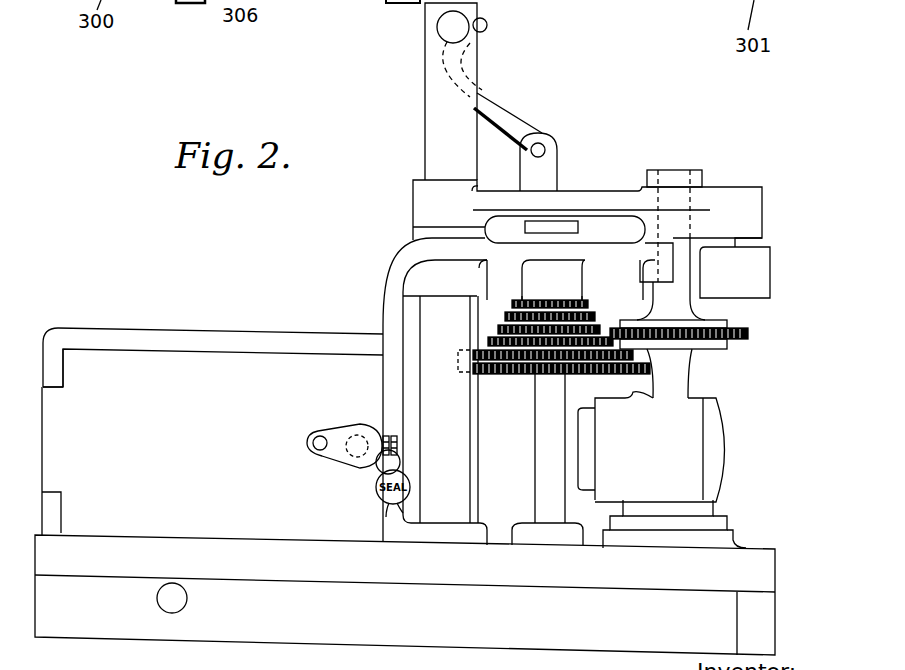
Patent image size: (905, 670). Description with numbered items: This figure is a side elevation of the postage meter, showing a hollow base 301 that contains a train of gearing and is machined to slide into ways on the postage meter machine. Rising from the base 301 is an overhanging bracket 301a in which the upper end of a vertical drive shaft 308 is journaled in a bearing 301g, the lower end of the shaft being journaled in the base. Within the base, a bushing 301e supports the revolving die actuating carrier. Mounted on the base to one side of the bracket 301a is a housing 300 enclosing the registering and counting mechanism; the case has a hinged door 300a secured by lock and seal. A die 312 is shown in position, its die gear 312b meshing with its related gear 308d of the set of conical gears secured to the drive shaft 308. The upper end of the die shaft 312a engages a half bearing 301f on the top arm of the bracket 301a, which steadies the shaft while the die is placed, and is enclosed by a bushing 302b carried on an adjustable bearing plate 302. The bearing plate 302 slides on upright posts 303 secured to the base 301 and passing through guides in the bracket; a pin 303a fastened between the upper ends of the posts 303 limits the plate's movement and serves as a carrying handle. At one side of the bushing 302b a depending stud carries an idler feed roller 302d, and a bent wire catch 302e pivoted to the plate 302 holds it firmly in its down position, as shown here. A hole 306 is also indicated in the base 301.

The housing 300 is at (208, 337).
The hinged door 300a is at (87, 365).
The hollow base 301 is at (747, 567).
The overhanging bracket 301a is at (398, 305).
The bushing 301e is at (643, 517).
The half bearing 301f is at (660, 257).
The bearing 301g is at (560, 225).
The bearing plate 302 is at (557, 203).
The bushing 302b is at (667, 181).
The idler feed roller 302d is at (742, 273).
The bent wire catch 302e is at (497, 118).
The upright posts 303 is at (452, 112).
The pin 303a is at (453, 27).
The screw hole 306 is at (178, 598).
The vertical drive shaft 308 is at (545, 420).
The gear 308d is at (476, 342).
The die 312 is at (683, 458).
The die shaft 312a is at (683, 252).
The die gear 312b is at (748, 338).